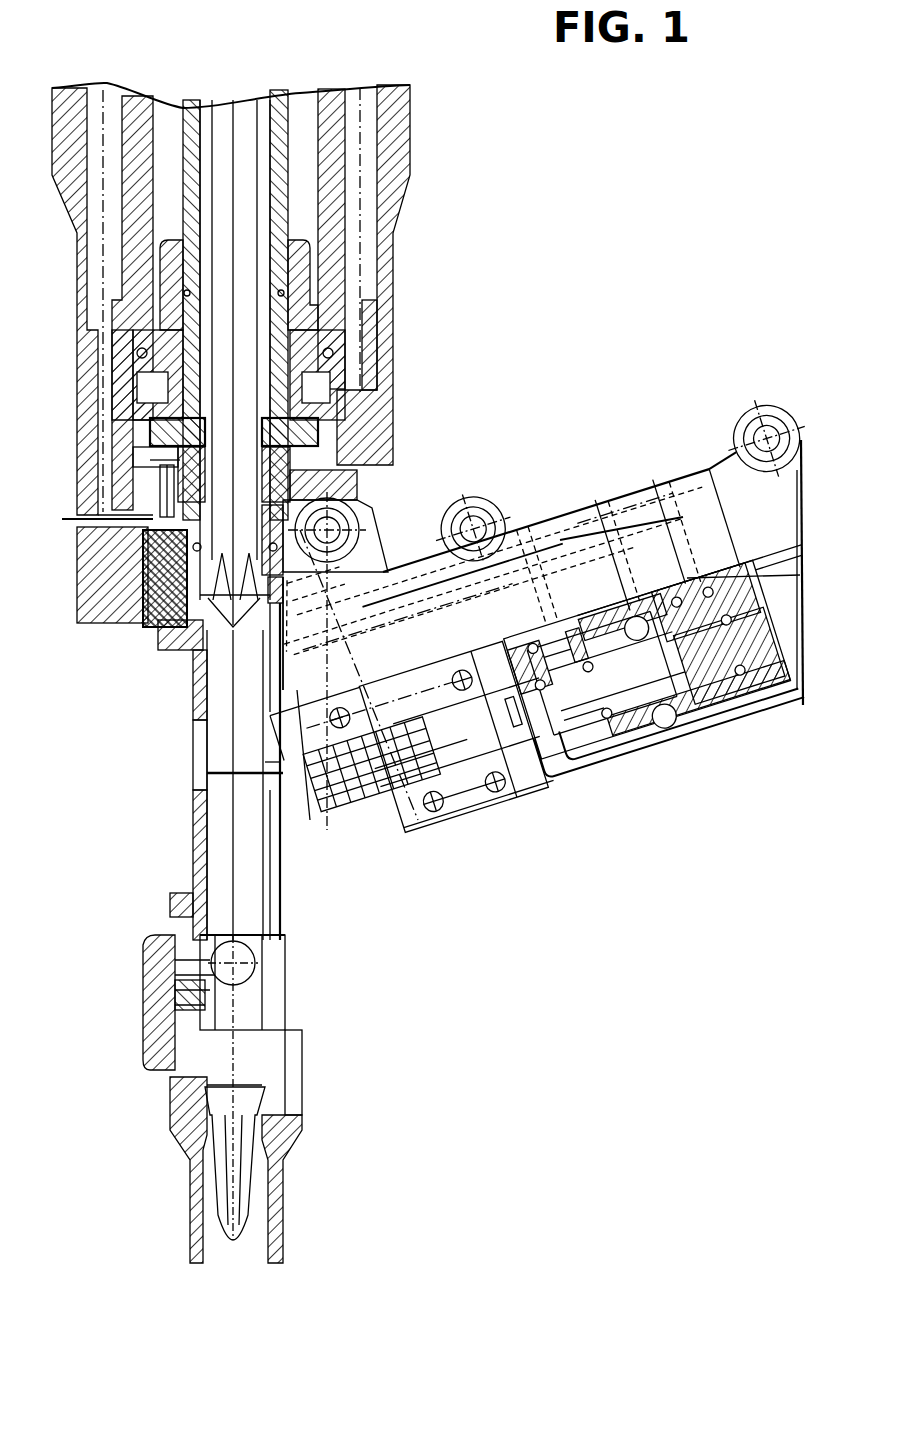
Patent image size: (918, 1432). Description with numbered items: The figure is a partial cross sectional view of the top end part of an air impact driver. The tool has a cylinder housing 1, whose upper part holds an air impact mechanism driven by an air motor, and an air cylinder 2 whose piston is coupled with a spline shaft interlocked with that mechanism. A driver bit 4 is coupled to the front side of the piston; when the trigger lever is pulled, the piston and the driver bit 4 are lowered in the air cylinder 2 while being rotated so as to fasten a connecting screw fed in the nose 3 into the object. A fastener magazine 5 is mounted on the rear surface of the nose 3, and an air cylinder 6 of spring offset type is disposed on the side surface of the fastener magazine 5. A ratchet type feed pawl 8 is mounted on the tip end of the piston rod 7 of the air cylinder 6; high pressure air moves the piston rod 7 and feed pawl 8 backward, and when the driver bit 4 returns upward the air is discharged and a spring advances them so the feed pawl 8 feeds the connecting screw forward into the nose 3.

The cylinder housing 1 is at (393, 258).
The air cylinder 2 is at (297, 117).
The nose 3 is at (192, 830).
The driver bit 4 is at (243, 115).
The fastener magazine 5 is at (628, 488).
The air cylinder 6 is at (710, 700).
The piston rod 7 is at (528, 732).
The feed pawl 8 is at (255, 825).